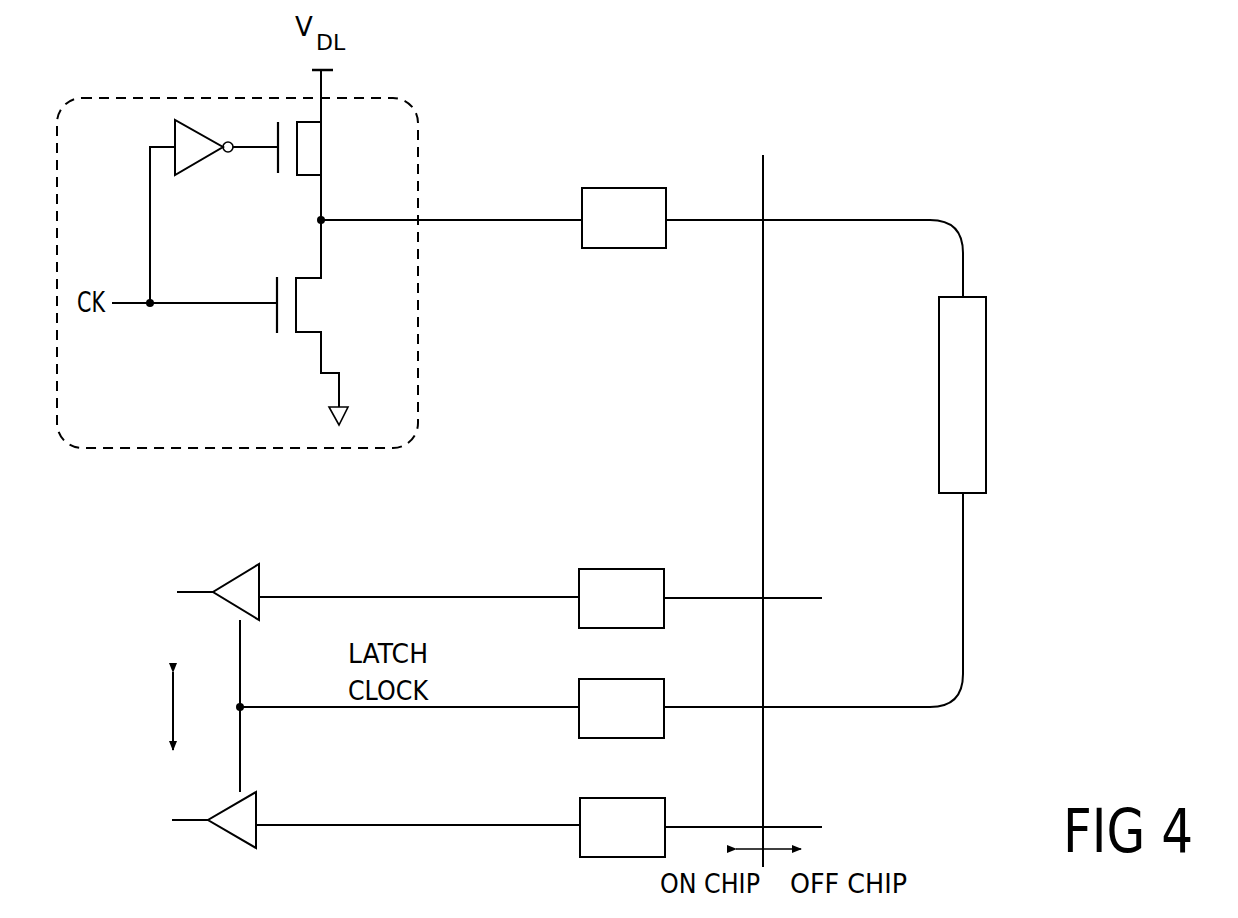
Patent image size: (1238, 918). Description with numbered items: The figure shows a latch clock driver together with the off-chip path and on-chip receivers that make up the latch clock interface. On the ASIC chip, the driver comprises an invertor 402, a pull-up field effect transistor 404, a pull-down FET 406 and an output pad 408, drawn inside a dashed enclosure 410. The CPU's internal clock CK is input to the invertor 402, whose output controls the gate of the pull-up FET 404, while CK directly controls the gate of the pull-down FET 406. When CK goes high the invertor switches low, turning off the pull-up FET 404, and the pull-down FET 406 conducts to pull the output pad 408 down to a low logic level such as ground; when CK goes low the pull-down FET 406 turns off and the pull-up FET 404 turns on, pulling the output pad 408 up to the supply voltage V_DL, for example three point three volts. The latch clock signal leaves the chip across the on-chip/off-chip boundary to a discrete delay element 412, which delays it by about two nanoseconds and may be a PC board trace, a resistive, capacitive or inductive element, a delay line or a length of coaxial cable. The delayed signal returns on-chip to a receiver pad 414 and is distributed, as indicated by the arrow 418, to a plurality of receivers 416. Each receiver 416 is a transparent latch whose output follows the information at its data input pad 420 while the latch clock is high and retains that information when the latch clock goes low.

The invertor 402 is at (173, 122).
The pull-up field effect transistor 404 is at (307, 146).
The pull-down FET 406 is at (307, 313).
The output pad 408 is at (628, 188).
The clock driver circuit 410 is at (140, 448).
The delay element 412 is at (985, 297).
The receiver pad 414 is at (593, 679).
The receivers 416 is at (243, 565).
The arrow 418 is at (172, 702).
The data input pads 420 is at (596, 569).